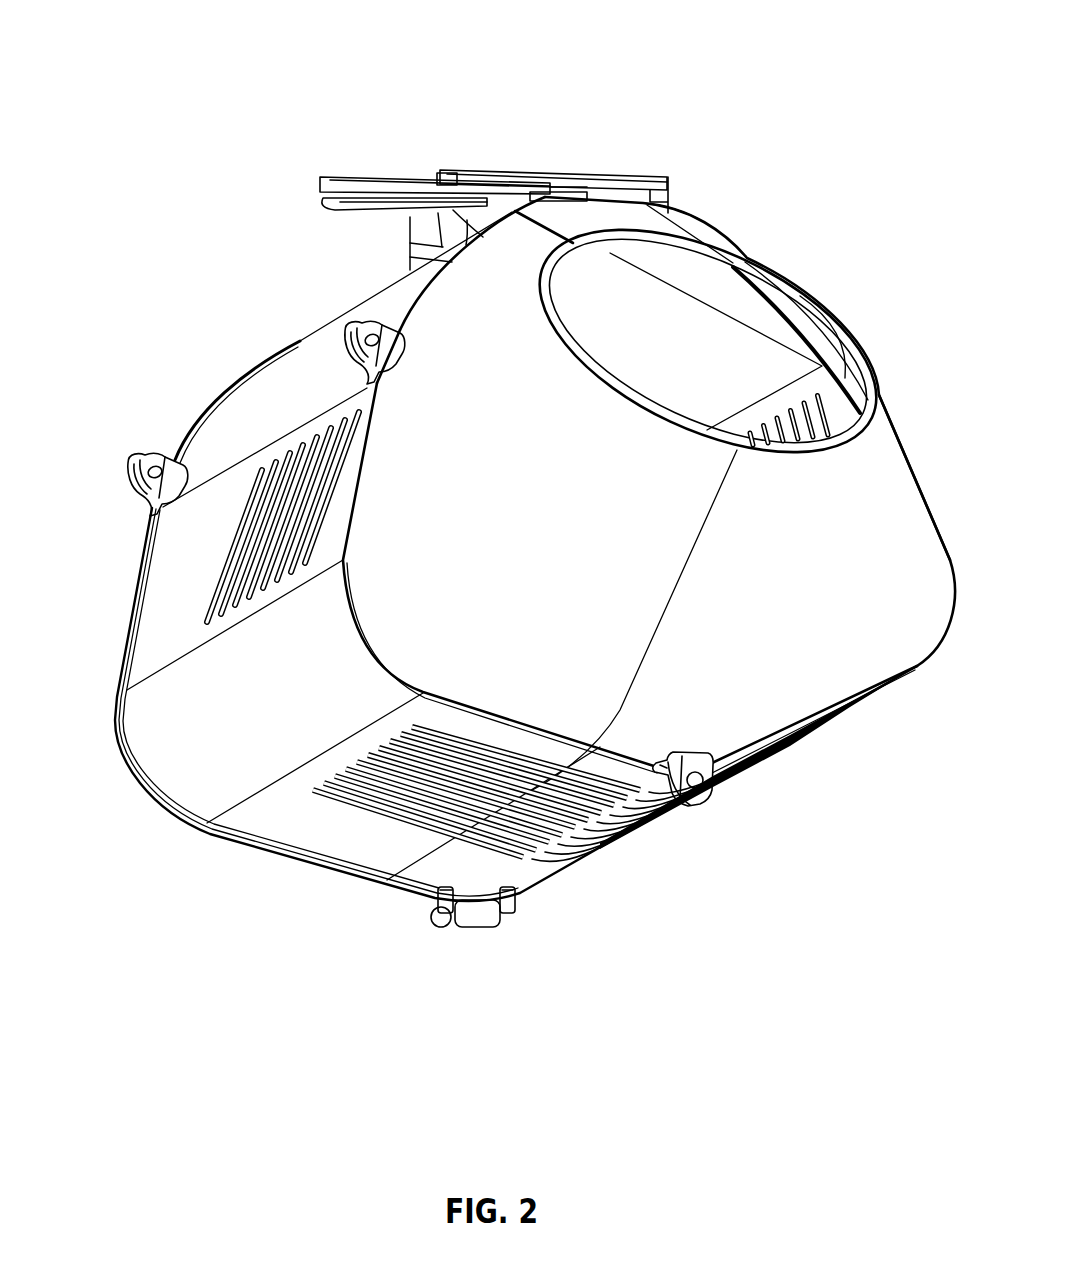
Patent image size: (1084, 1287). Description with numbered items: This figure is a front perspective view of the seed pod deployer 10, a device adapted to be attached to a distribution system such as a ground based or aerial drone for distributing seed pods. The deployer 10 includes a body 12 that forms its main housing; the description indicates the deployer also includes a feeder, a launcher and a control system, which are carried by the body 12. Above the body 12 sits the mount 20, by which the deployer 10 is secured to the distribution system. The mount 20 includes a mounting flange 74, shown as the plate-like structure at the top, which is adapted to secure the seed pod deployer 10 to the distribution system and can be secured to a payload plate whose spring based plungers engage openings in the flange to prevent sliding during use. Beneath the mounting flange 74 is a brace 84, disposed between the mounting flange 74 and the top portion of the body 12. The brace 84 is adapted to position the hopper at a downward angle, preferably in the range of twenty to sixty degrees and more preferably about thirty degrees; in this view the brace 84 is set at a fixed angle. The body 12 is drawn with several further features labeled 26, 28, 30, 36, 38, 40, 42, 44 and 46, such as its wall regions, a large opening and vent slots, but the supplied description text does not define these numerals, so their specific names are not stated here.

The seed pod deployer 10 is at (202, 337).
The body 12 is at (173, 767).
The mount 20 is at (583, 155).
The upper side wall 26 is at (273, 377).
The lower side wall 28 is at (163, 625).
The bottom wall 30 is at (313, 837).
The vent slots 36 is at (210, 565).
The opening 38 is at (680, 305).
The front wall 40 is at (831, 228).
The side edge 42 is at (895, 353).
The front face 44 is at (457, 529).
The interior surface 46 is at (663, 380).
The mounting flange 74 is at (393, 178).
The brace 84 is at (423, 228).